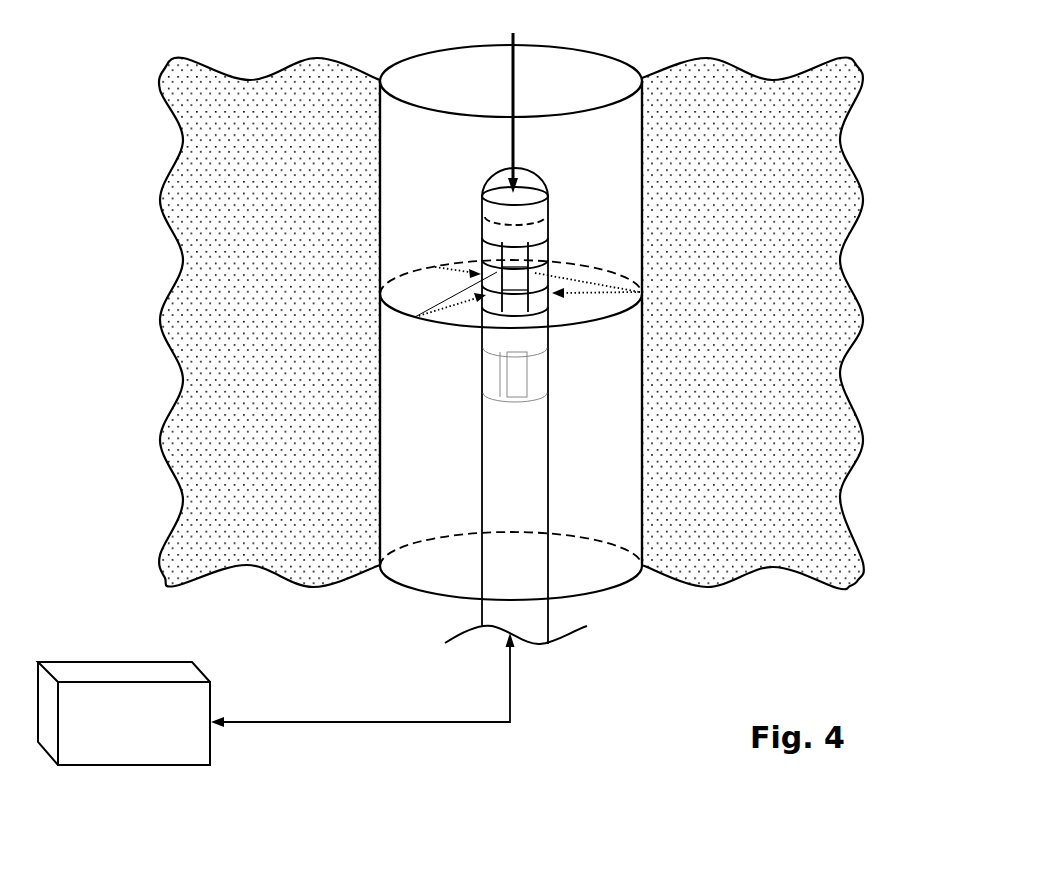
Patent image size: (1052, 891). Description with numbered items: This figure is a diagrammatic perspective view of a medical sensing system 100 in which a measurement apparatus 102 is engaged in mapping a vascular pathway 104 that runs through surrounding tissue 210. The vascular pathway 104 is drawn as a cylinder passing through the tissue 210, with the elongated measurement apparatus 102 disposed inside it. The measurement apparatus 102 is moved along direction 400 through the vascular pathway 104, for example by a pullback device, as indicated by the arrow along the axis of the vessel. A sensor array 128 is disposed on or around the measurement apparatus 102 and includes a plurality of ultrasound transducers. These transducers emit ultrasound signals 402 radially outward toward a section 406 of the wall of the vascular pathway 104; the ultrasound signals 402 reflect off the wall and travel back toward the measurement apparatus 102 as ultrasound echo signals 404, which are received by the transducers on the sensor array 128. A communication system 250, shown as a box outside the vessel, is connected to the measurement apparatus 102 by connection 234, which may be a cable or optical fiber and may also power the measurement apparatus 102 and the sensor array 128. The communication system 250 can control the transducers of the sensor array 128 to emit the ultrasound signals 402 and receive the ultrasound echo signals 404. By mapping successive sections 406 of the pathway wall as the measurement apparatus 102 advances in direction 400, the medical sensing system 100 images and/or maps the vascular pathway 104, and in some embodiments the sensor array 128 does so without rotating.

The medical sensing system 100 is at (528, 338).
The measurement apparatus 102 is at (568, 406).
The vascular pathway 104 is at (640, 127).
The sensor array 128 is at (548, 305).
The tissue 210 is at (158, 80).
The connection 234 is at (272, 722).
The communication system 250 is at (102, 668).
The direction 400 is at (517, 72).
The ultrasound signals 402 is at (570, 282).
The ultrasound echo signals 404 is at (602, 320).
The section 406 is at (422, 267).